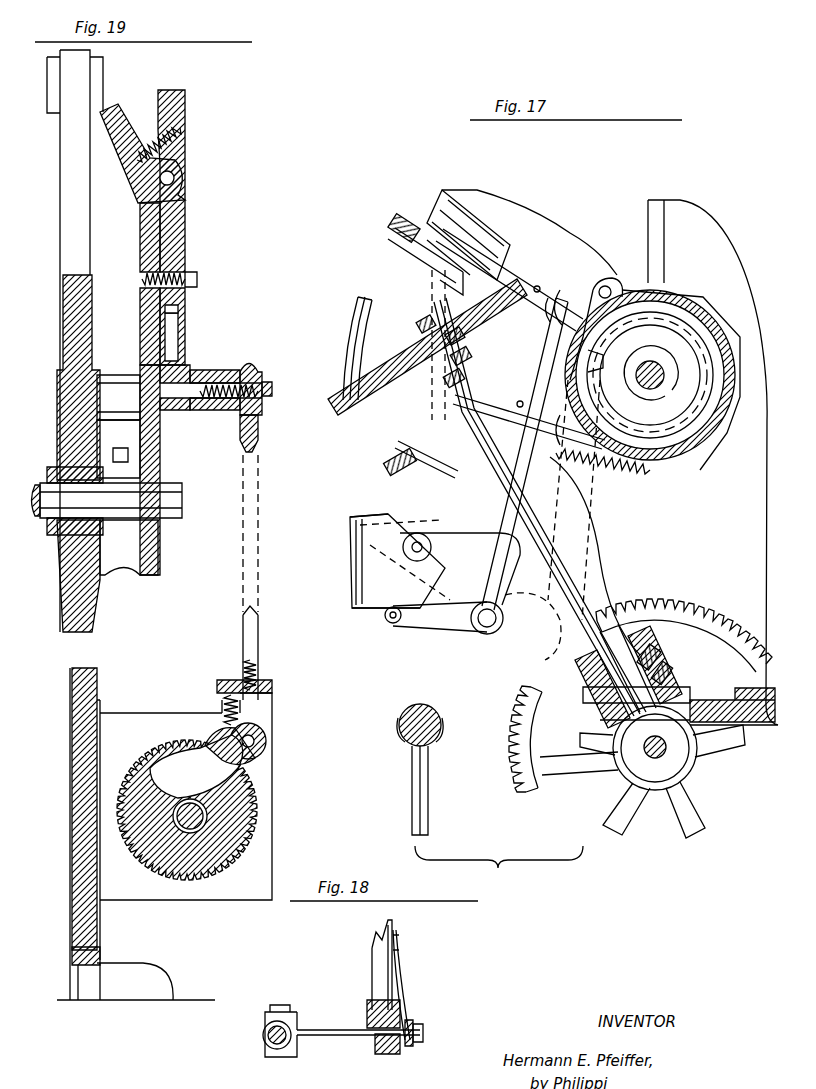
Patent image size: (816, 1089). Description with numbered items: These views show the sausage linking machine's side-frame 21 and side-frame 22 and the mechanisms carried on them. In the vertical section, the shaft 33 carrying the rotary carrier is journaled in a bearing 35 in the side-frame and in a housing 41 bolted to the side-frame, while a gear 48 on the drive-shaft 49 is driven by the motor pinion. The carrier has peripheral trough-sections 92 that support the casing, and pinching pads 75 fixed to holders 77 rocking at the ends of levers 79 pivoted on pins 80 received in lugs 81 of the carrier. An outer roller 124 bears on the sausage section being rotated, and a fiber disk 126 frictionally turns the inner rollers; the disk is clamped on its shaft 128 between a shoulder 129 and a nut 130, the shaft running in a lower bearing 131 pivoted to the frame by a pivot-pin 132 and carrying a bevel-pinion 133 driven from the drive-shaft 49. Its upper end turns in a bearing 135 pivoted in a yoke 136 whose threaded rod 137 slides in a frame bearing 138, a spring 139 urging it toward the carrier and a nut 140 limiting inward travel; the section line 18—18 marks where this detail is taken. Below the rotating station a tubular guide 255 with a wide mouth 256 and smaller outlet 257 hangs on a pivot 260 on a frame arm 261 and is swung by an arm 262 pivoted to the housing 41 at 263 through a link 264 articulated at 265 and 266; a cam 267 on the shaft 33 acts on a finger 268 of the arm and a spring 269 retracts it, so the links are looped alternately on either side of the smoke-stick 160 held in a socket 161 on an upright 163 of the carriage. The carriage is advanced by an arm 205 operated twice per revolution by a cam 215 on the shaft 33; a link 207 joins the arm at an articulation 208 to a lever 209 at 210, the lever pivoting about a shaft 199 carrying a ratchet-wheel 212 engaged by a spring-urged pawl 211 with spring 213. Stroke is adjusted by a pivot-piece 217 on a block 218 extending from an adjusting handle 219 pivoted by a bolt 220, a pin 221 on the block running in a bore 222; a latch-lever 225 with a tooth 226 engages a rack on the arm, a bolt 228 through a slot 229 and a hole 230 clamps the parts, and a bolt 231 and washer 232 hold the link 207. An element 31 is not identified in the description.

In FIG. 17, the side-frame 21 is at (680, 212).
In FIG. 19, the side-frame 22 is at (60, 597).
In FIG. 18, the side-frame 22 is at (378, 956).
In FIG. 17, the housing 31 is at (441, 212).
In FIG. 19, the shaft 33 is at (172, 518).
In FIG. 17, the shaft 33 is at (663, 378).
In FIG. 19, the bearing 35 is at (63, 540).
In FIG. 17, the housing 41 is at (685, 302).
In FIG. 17, the gear 48 is at (512, 776).
In FIG. 17, the drive-shaft 49 is at (662, 757).
In FIG. 17, the pinching pads 75 is at (392, 226).
In FIG. 17, the holder 77 is at (410, 258).
In FIG. 17, the lever 79 is at (513, 286).
In FIG. 17, the pin 80 is at (538, 286).
In FIG. 17, the lugs 81 is at (562, 300).
In FIG. 17, the peripheral trough-sections 92 is at (454, 194).
In FIG. 17, the outer roller 124 is at (356, 330).
In FIG. 17, the rotating disk 126 is at (340, 416).
In FIG. 17, the shaft 128 is at (574, 590).
In FIG. 18, the shaft 128 is at (268, 1040).
In FIG. 17, the shoulder 129 is at (455, 330).
In FIG. 17, the nut 130 is at (427, 318).
In FIG. 17, the lower bearing 131 is at (646, 650).
In FIG. 17, the pivot-pin 132 is at (664, 660).
In FIG. 17, the bevel-pinion 133 is at (612, 748).
In FIG. 17, the bearing 135 is at (472, 388).
In FIG. 18, the bearing 135 is at (267, 1028).
In FIG. 17, the yoke 136 is at (470, 372).
In FIG. 18, the yoke 136 is at (292, 1012).
In FIG. 18, the threaded rod 137 is at (330, 1030).
In FIG. 18, the bearing 138 is at (380, 1055).
In FIG. 18, the spring 139 is at (405, 997).
In FIG. 18, the nut 140 is at (414, 1047).
In FIG. 17, the smoke-stick 160 is at (422, 708).
In FIG. 17, the socket 161 is at (446, 736).
In FIG. 17, the upright 163 is at (412, 811).
In FIG. 19, the shaft 199 is at (150, 788).
In FIG. 19, the arm 205 is at (143, 258).
In FIG. 19, the link 207 is at (258, 625).
In FIG. 19, the articulation 208 is at (255, 364).
In FIG. 19, the lever 209 is at (265, 713).
In FIG. 19, the articulation 210 is at (268, 681).
In FIG. 19, the pawl 211 is at (268, 737).
In FIG. 19, the ratchet-wheel 212 is at (265, 816).
In FIG. 19, the spring 213 is at (223, 706).
In FIG. 19, the cam 215 is at (160, 455).
In FIG. 19, the pivot-piece 217 is at (232, 368).
In FIG. 19, the block 218 is at (196, 368).
In FIG. 19, the adjusting handle 219 is at (180, 238).
In FIG. 19, the bolt 220 is at (196, 277).
In FIG. 19, the pin 221 is at (178, 336).
In FIG. 19, the bore 222 is at (178, 312).
In FIG. 19, the latch-lever 225 is at (118, 112).
In FIG. 19, the tooth 226 is at (142, 216).
In FIG. 19, the bolt 228 is at (138, 374).
In FIG. 19, the slot 229 is at (132, 424).
In FIG. 19, the hole 230 is at (170, 412).
In FIG. 19, the bolt 231 is at (263, 390).
In FIG. 19, the washer 232 is at (272, 383).
In FIG. 17, the tubular guide 255 is at (352, 555).
In FIG. 17, the wide mouth 256 is at (364, 516).
In FIG. 17, the outlet 257 is at (390, 617).
In FIG. 17, the pivot 260 is at (417, 533).
In FIG. 17, the arm 261 is at (548, 648).
In FIG. 17, the arm 262 is at (548, 468).
In FIG. 17, the pivot 263 is at (606, 286).
In FIG. 17, the link 264 is at (461, 632).
In FIG. 17, the articulation 265 is at (490, 635).
In FIG. 17, the articulation 266 is at (395, 624).
In FIG. 17, the cam 267 is at (690, 452).
In FIG. 17, the finger 268 is at (588, 366).
In FIG. 17, the spring 269 is at (625, 472).
In FIG. 17, the section line 18 is at (498, 336).